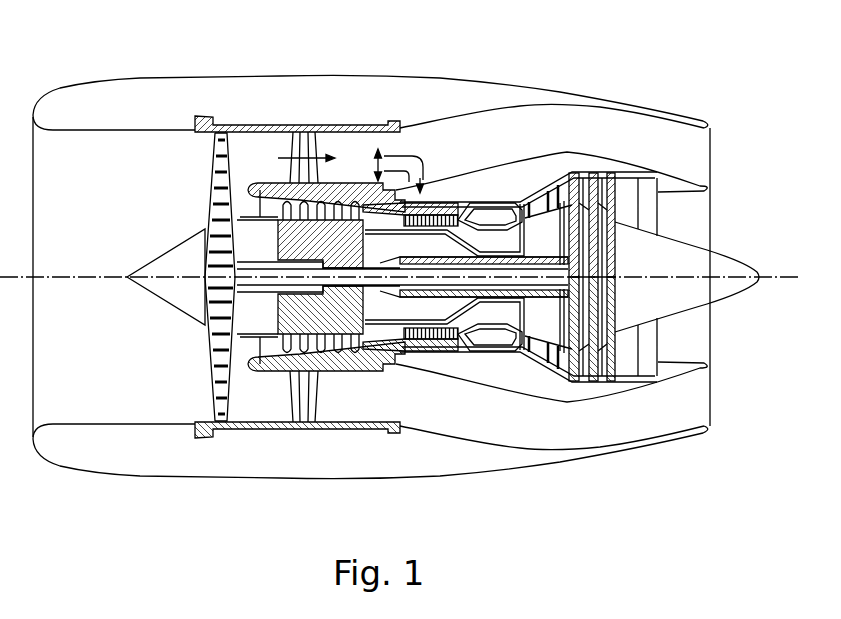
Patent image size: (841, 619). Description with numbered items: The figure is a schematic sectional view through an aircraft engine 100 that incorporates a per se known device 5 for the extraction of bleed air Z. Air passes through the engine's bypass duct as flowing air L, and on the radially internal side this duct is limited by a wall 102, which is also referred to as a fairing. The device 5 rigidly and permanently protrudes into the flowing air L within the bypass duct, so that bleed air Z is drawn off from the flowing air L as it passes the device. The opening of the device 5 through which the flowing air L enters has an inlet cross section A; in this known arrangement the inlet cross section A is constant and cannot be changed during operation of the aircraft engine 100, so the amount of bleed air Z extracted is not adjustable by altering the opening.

The aircraft engine 100 is at (400, 242).
The wall 102 is at (569, 160).
The flowing air L is at (303, 172).
The device for the extraction of bleed air 5 is at (415, 151).
The inlet cross section A is at (367, 165).
The bleed air Z is at (428, 177).